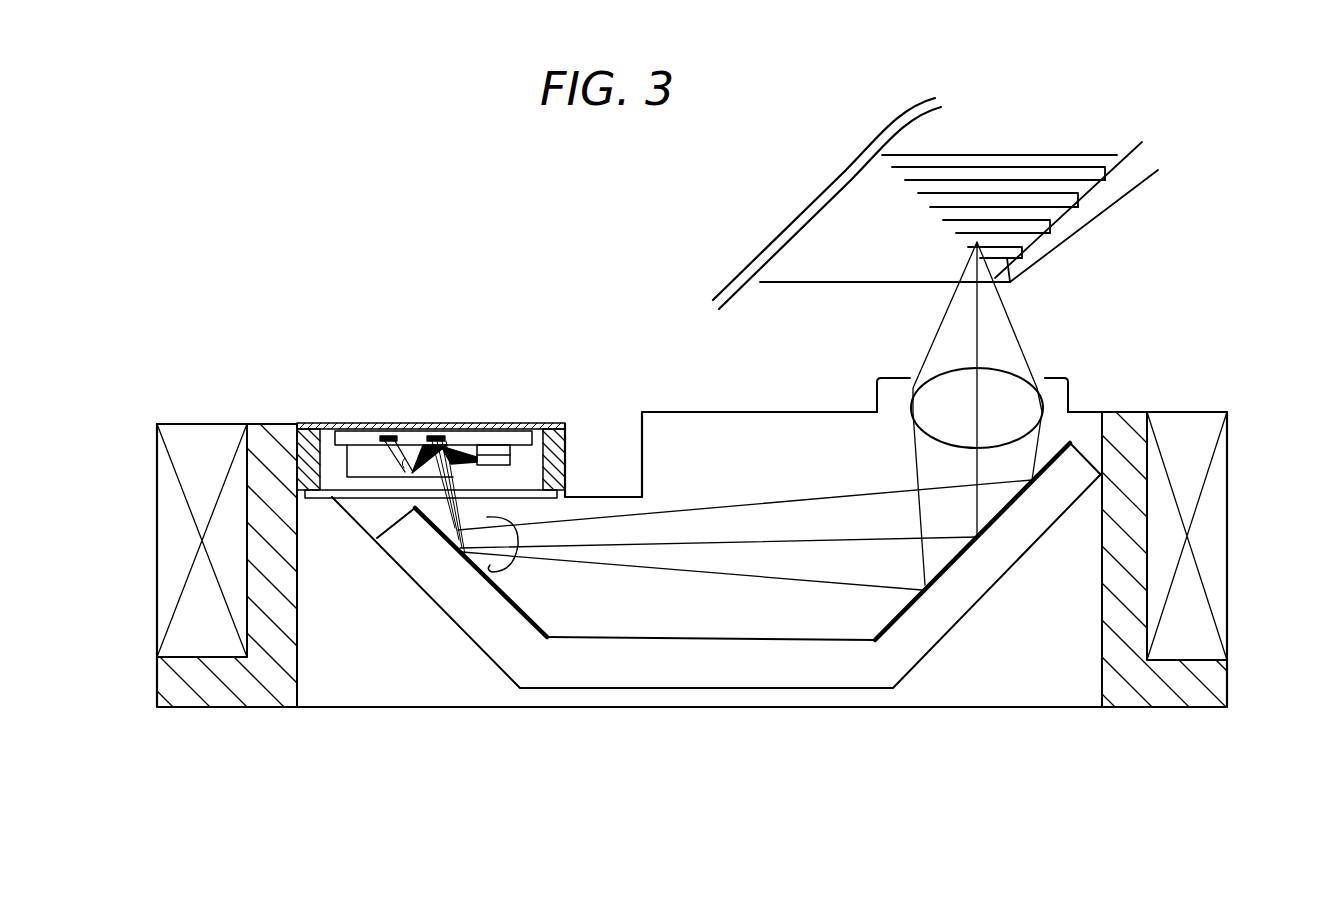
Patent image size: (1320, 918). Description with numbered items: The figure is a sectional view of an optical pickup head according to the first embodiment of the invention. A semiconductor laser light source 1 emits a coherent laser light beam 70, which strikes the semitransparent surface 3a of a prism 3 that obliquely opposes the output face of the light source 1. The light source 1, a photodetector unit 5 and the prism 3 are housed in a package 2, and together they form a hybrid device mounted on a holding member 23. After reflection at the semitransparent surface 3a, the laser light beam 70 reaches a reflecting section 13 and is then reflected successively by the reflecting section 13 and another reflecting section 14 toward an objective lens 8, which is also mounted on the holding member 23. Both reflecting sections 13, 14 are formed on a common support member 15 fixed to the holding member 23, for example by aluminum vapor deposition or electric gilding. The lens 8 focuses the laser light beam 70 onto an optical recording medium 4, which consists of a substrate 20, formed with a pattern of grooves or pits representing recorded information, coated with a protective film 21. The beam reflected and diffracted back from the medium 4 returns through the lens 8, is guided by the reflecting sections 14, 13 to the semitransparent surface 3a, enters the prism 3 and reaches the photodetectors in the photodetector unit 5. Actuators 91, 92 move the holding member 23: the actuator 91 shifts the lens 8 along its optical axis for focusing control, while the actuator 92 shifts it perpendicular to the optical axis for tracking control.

The semiconductor laser light source 1 is at (490, 448).
The package 2 is at (567, 428).
The prism 3 is at (358, 452).
The semitransparent surface 3a is at (423, 533).
The optical recording medium 4 is at (1060, 242).
The photodetector unit 5 is at (362, 434).
The objective lens 8 is at (1070, 390).
The reflecting section 13 is at (490, 577).
The reflecting section 14 is at (948, 570).
The common support member 15 is at (775, 660).
The substrate 20 is at (934, 203).
The protective film 21 is at (1092, 200).
The holding member 23 is at (1062, 680).
The laser light beam 70 is at (392, 467).
The actuator 91 is at (167, 592).
The actuator 92 is at (1218, 600).